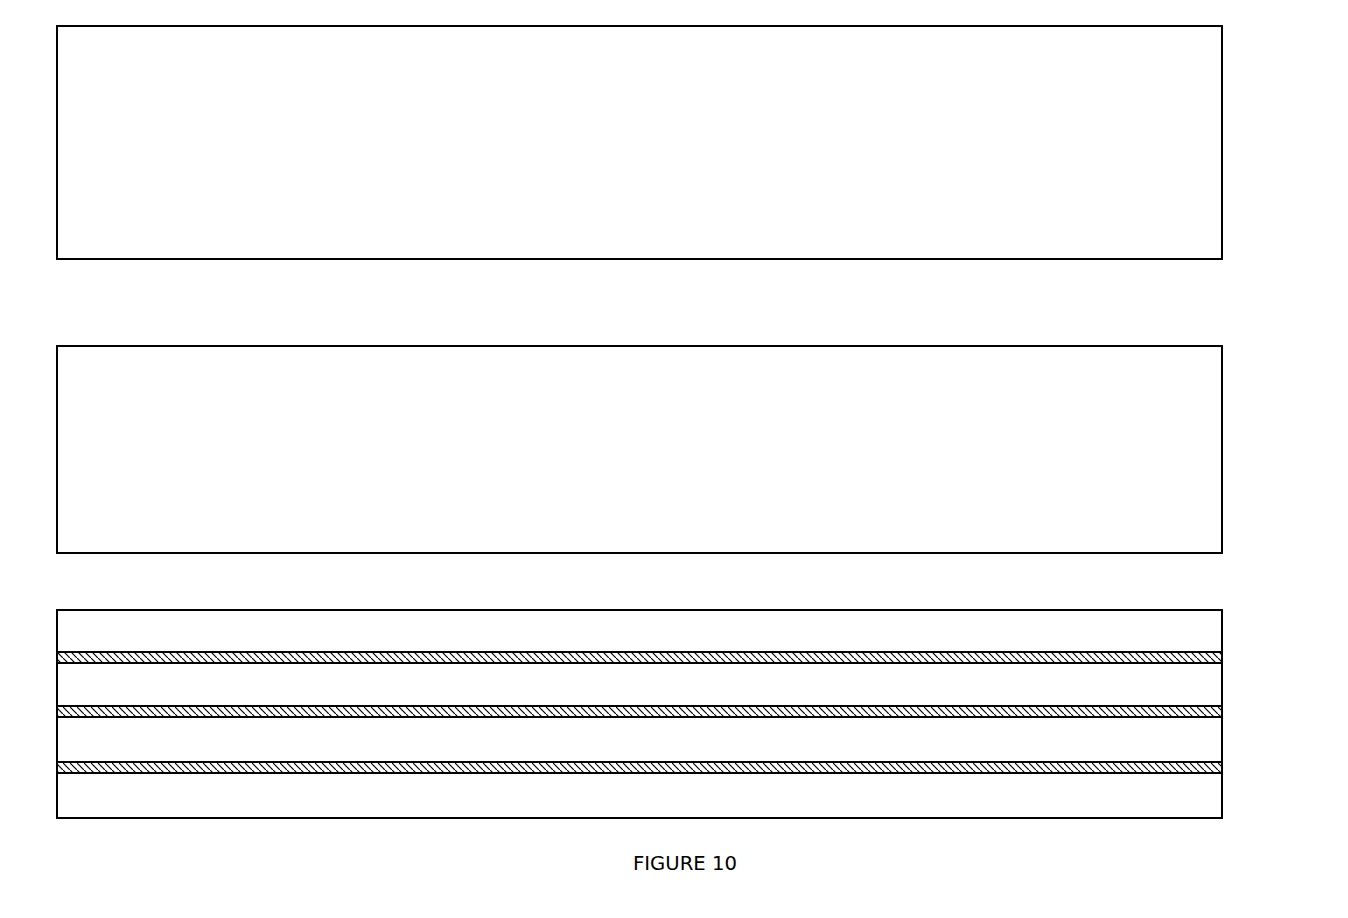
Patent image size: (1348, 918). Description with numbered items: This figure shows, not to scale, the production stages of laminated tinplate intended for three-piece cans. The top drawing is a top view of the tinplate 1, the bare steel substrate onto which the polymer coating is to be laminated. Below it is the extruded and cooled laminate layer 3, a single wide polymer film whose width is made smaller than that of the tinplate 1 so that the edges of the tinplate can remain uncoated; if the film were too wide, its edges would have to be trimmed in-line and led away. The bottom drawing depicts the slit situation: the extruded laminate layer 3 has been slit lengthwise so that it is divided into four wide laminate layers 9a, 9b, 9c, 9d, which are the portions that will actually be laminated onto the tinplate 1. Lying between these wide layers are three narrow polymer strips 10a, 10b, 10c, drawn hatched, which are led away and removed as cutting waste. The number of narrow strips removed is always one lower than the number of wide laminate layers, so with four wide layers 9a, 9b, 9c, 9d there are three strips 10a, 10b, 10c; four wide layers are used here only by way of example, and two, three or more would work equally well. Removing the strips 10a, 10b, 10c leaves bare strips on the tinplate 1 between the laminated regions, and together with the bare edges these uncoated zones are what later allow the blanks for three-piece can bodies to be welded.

The tinplate 1 is at (648, 158).
The laminate layer 3 is at (630, 469).
The wide laminate layer 9a is at (622, 645).
The wide laminate layer 9b is at (622, 700).
The wide laminate layer 9c is at (622, 757).
The wide laminate layer 9d is at (622, 812).
The narrow polymer strip 10a is at (1227, 660).
The narrow polymer strip 10b is at (1227, 712).
The narrow polymer strip 10c is at (1227, 767).